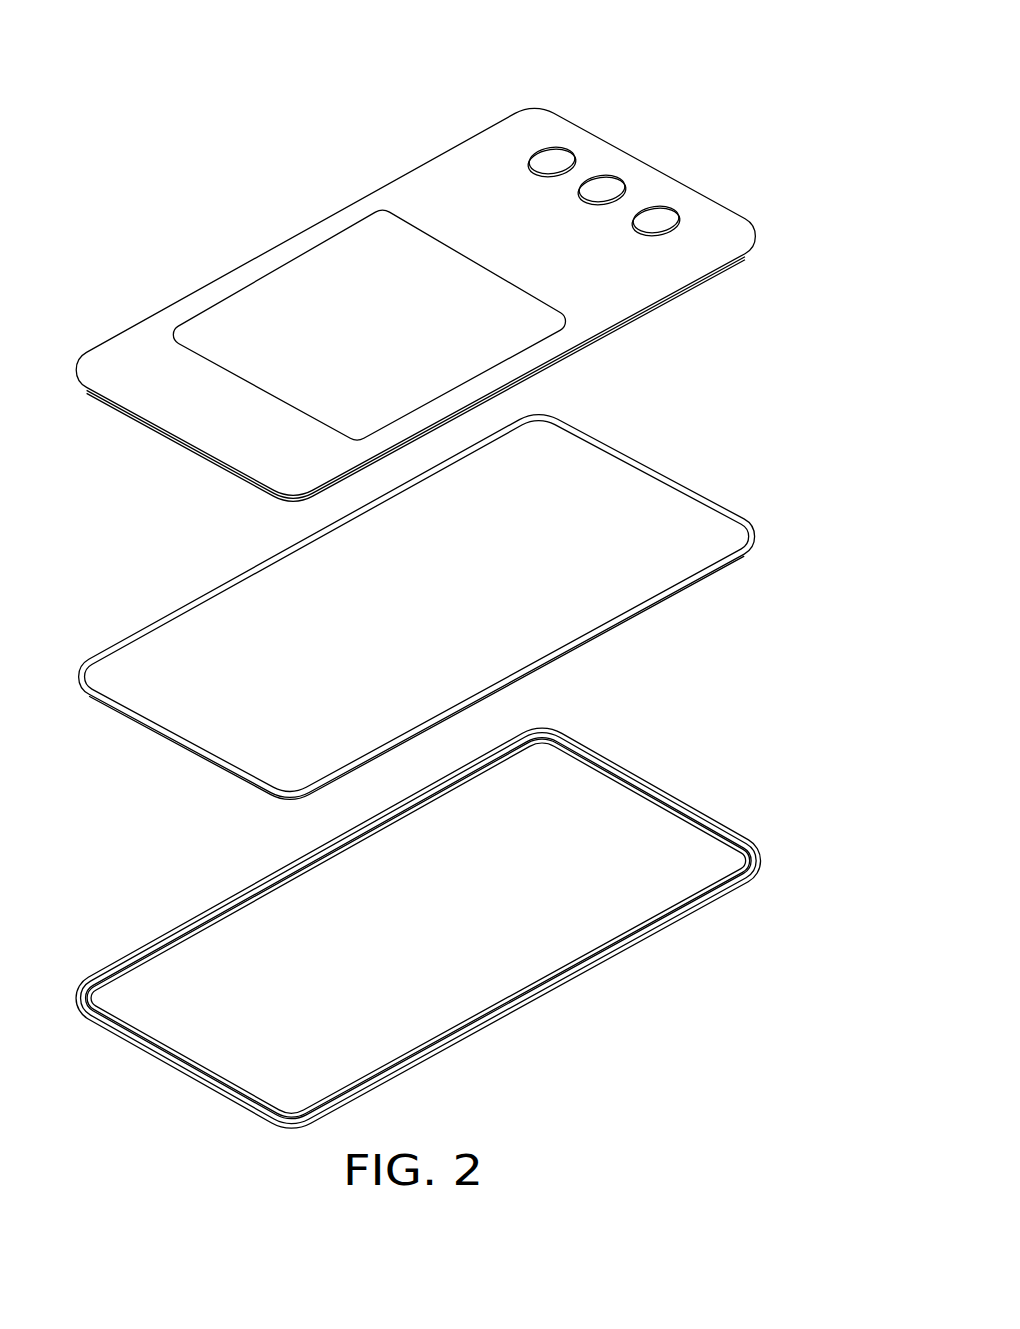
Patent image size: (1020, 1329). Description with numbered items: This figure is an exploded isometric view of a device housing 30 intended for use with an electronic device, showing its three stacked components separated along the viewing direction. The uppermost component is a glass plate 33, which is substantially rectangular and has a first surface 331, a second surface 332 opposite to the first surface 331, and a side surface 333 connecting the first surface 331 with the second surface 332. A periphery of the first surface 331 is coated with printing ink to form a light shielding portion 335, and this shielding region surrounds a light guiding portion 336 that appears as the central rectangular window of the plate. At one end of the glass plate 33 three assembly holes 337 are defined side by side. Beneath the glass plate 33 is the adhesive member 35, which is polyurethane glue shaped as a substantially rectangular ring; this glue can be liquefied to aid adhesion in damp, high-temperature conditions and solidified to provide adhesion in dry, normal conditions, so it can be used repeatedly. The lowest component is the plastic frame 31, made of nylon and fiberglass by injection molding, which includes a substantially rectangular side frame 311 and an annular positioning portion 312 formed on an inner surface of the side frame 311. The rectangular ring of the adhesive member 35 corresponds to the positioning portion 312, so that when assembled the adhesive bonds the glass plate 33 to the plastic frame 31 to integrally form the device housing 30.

The device housing 30 is at (308, 72).
The plastic frame 31 is at (135, 940).
The side frame 311 is at (640, 935).
The positioning portion 312 is at (685, 818).
The glass plate 33 is at (204, 284).
The first surface 331 is at (150, 394).
The second surface 332 is at (211, 467).
The side surface 333 is at (568, 350).
The light shielding portion 335 is at (653, 193).
The light guiding portion 336 is at (325, 285).
The assembly holes 337 is at (555, 163).
The adhesive member 35 is at (97, 662).